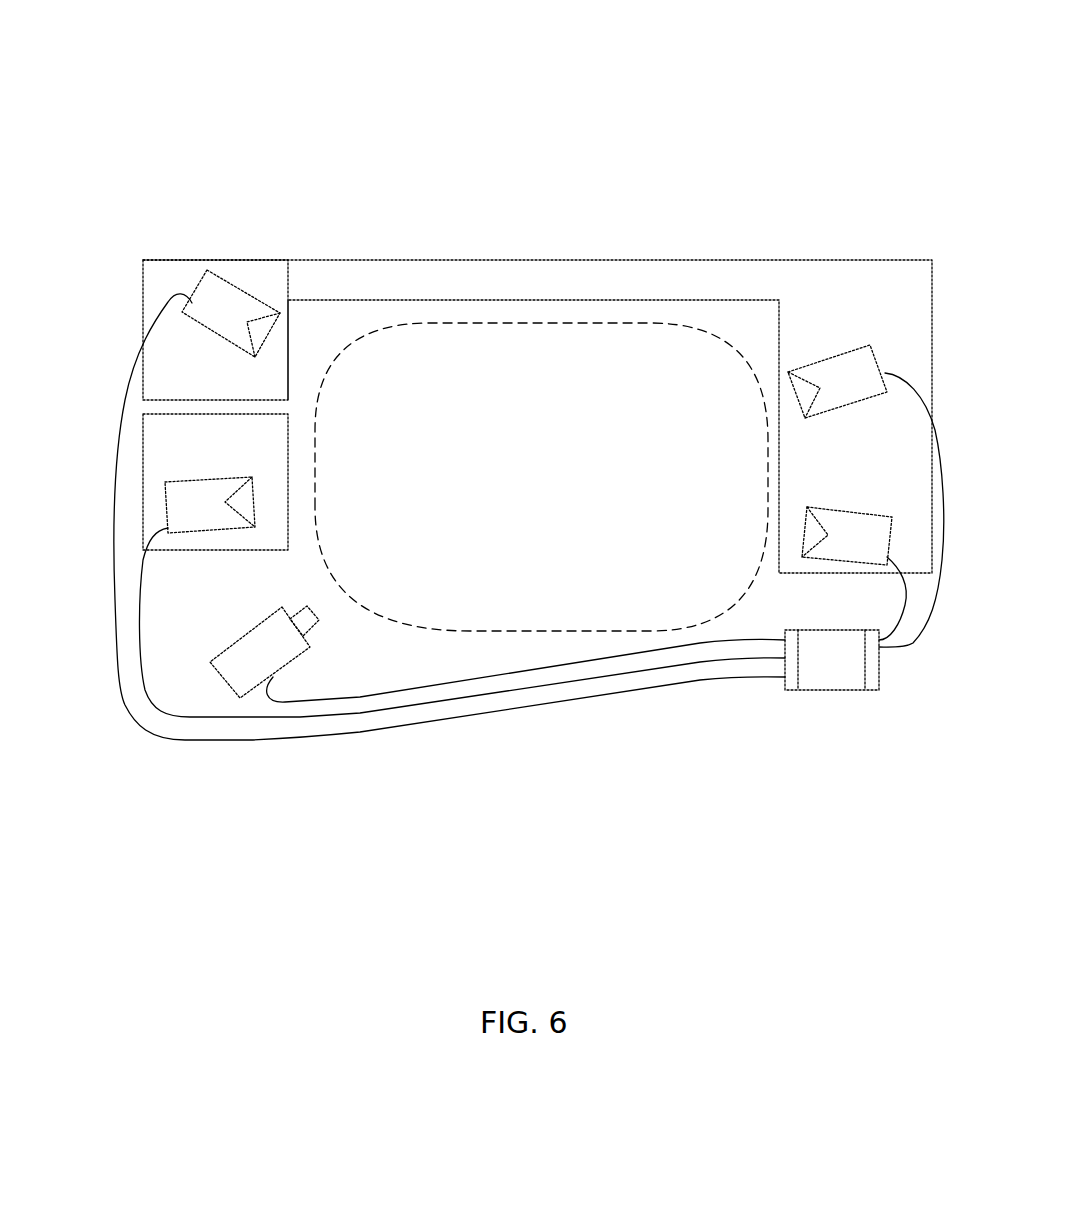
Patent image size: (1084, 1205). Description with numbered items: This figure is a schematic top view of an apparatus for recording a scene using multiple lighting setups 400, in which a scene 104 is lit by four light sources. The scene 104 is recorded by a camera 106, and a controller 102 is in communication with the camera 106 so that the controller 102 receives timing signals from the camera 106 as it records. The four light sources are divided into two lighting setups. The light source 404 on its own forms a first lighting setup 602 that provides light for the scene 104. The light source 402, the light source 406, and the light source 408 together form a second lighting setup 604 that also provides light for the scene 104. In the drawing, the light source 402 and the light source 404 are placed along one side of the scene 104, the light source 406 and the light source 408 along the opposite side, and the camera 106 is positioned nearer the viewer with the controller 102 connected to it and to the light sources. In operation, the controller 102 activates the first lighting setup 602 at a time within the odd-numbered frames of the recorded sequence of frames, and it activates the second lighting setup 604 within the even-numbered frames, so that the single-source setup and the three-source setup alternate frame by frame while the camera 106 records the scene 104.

The apparatus for recording a scene using multiple lighting setups 400 is at (553, 72).
The second lighting setup 604 is at (253, 242).
The first lighting setup 602 is at (120, 490).
The scene 104 is at (556, 493).
The light source 402 is at (206, 318).
The light source 404 is at (197, 482).
The light source 406 is at (845, 397).
The light source 408 is at (893, 500).
The camera 106 is at (250, 642).
The controller 102 is at (833, 680).